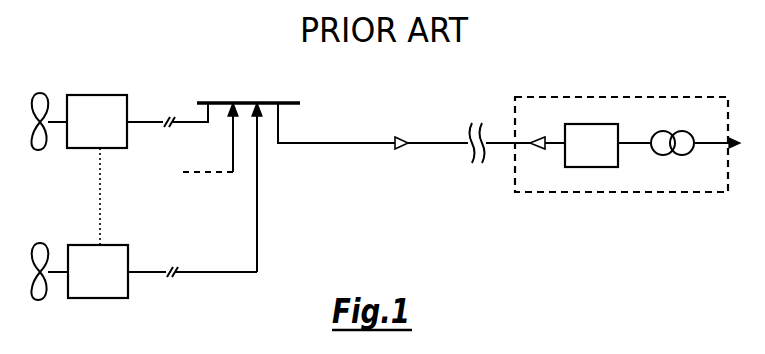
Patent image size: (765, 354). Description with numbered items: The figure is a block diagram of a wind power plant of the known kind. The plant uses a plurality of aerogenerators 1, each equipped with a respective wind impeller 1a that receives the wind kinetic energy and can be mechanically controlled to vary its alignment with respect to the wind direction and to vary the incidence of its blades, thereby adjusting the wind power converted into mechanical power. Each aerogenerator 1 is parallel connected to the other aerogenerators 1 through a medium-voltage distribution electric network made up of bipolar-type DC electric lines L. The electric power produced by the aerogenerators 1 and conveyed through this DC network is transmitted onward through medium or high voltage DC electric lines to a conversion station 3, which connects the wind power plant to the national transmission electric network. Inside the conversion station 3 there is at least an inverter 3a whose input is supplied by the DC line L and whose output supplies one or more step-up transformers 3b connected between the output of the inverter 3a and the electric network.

The aerogenerator 1 is at (97, 107).
The wind impeller 1a is at (37, 93).
The DC electric line L is at (137, 112).
The conversion station 3 is at (508, 173).
The inverter 3a is at (582, 133).
The step-up transformer 3b is at (669, 122).